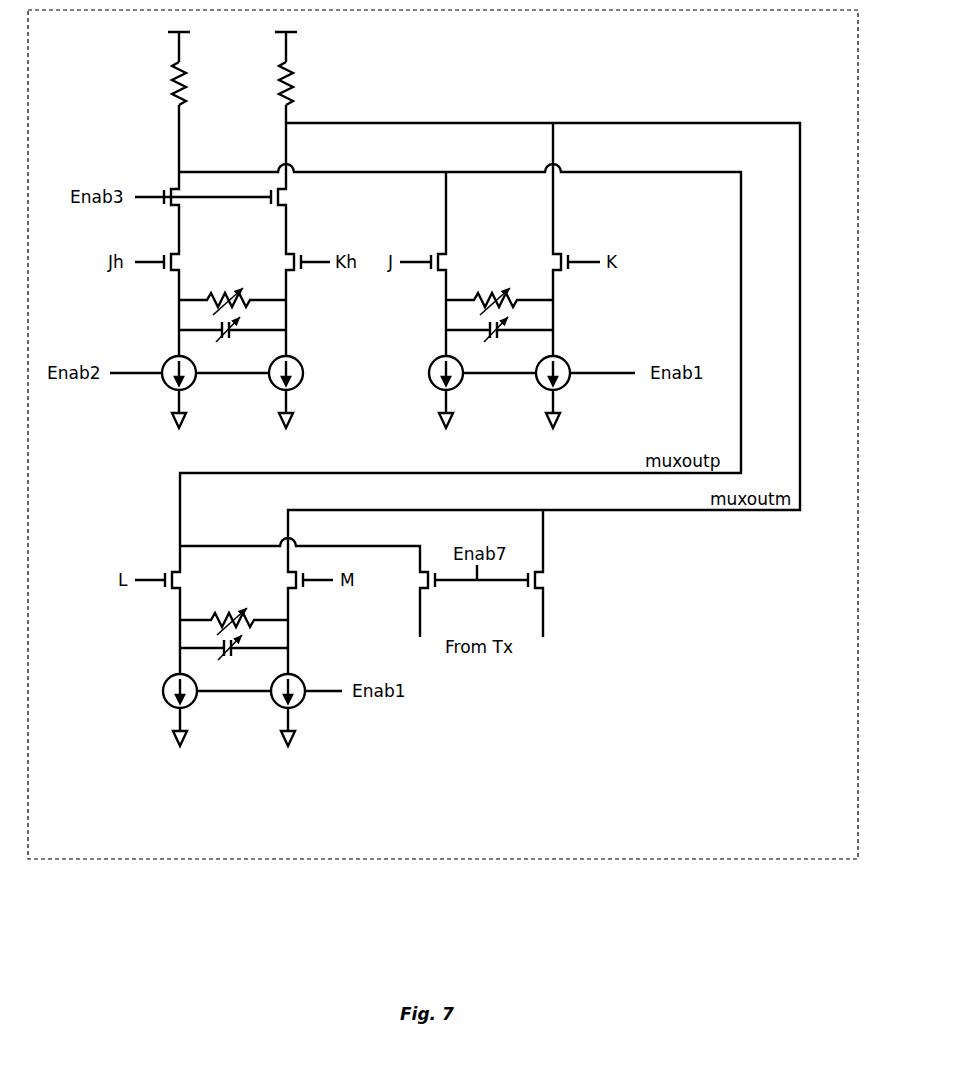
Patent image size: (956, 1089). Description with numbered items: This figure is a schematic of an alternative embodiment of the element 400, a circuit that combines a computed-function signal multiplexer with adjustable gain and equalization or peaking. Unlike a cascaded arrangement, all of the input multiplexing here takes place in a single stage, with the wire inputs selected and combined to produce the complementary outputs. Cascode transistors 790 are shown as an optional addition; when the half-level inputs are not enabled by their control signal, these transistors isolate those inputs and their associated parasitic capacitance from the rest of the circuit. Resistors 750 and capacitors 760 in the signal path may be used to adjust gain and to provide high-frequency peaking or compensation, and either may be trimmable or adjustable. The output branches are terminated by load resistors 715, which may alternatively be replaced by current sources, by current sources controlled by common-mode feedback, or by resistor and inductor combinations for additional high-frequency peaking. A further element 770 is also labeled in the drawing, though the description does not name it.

The element 400 is at (777, 18).
The load resistors 715 is at (274, 81).
The cascode transistors 790 is at (272, 184).
The resistors 750 is at (481, 289).
The capacitors 760 is at (482, 318).
The Enab7 transistor pair 770 is at (528, 594).